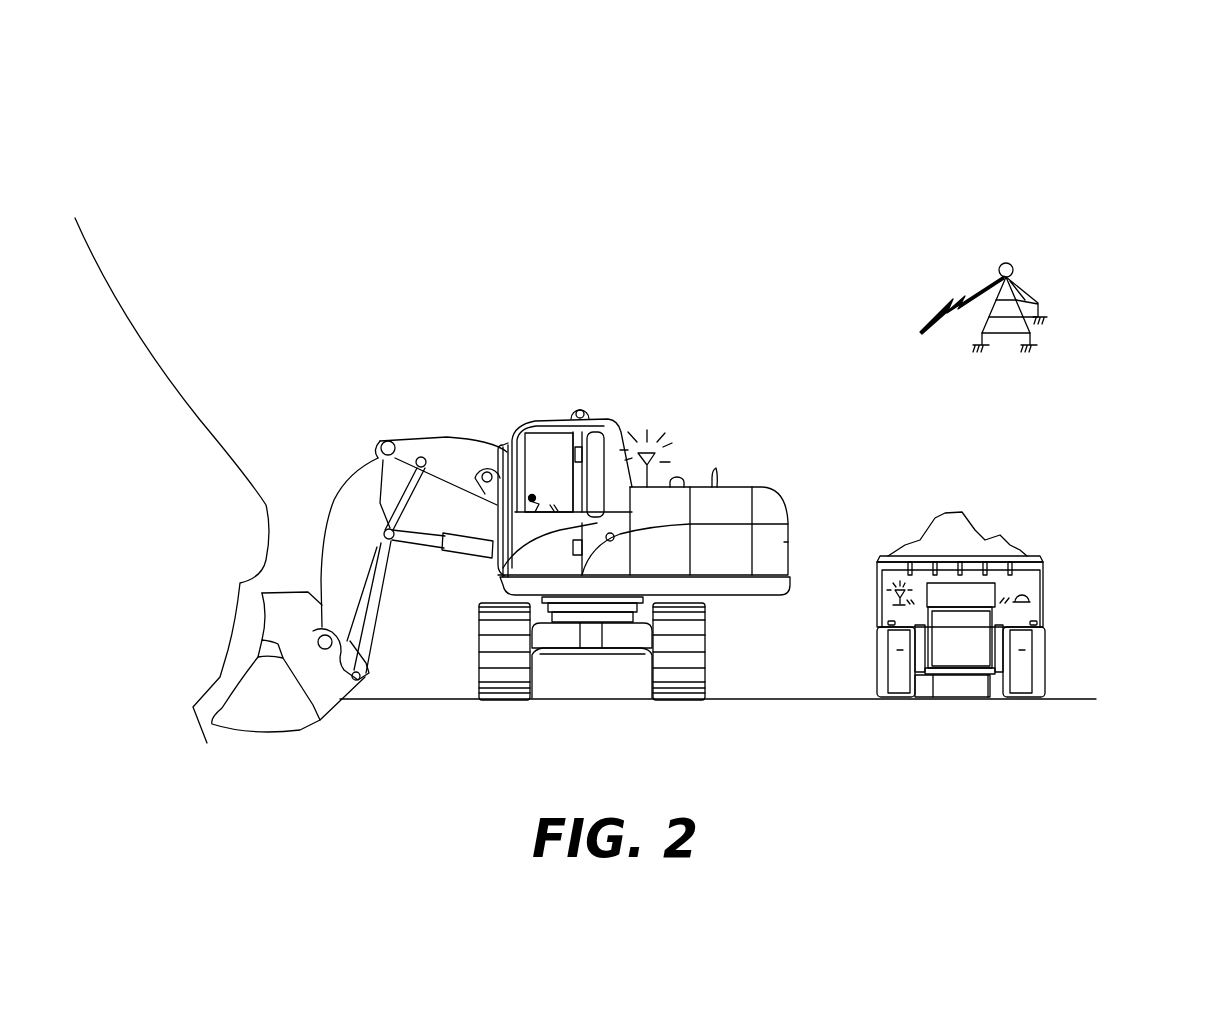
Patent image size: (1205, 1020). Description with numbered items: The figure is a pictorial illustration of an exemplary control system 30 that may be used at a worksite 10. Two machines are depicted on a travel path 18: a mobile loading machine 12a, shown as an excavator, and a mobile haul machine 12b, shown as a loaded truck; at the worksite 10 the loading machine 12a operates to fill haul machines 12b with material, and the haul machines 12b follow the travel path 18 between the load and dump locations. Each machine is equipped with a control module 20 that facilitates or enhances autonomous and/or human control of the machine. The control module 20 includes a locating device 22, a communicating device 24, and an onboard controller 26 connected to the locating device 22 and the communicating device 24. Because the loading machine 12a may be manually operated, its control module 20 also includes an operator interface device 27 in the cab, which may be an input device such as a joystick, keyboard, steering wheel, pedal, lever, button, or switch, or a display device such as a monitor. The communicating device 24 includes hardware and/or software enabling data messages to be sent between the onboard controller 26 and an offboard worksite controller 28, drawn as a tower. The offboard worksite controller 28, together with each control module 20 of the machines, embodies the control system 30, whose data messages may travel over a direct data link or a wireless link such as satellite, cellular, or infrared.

The worksite 10 is at (873, 767).
The mobile loading machine 12a is at (769, 503).
The mobile haul machine 12b is at (1042, 562).
The travel path 18 is at (1077, 697).
The control module 20 is at (692, 421).
The locating device 22 is at (681, 478).
The communicating device 24 is at (650, 445).
The onboard controller 26 is at (673, 518).
The operator interface device 27 is at (532, 494).
The offboard worksite controller 28 is at (1006, 263).
The control system 30 is at (1058, 120).